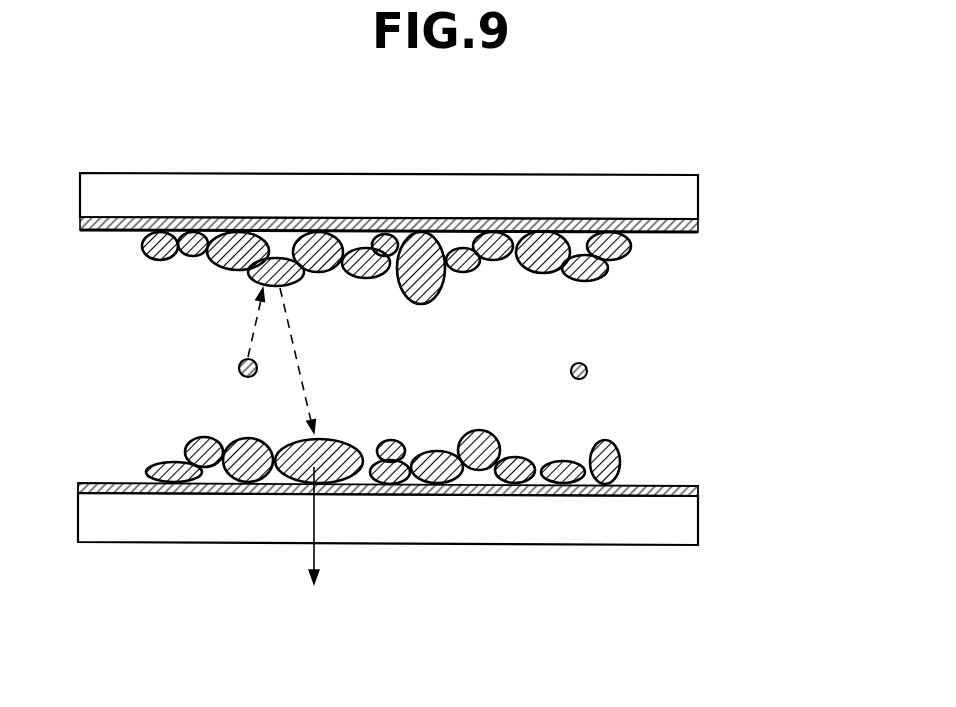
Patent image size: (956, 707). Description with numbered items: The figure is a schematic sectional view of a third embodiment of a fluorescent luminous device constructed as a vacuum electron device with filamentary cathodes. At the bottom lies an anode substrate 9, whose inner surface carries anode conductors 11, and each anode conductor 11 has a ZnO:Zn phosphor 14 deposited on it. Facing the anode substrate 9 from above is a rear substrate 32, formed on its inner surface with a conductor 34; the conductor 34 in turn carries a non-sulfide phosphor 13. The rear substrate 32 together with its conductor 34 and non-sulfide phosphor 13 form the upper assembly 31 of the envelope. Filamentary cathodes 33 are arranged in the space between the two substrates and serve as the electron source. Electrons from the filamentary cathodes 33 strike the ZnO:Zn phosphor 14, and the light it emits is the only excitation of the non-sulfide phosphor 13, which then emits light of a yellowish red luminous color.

The counter substrate assembly 31 is at (450, 186).
The rear substrate 32 is at (690, 192).
The conductor 34 is at (700, 226).
The non-sulfide phosphor 13 is at (625, 248).
The filamentary cathodes 33 is at (239, 366).
The ZnO:Zn phosphor 14 is at (614, 446).
The anode conductors 11 is at (668, 487).
The anode substrate 9 is at (688, 522).